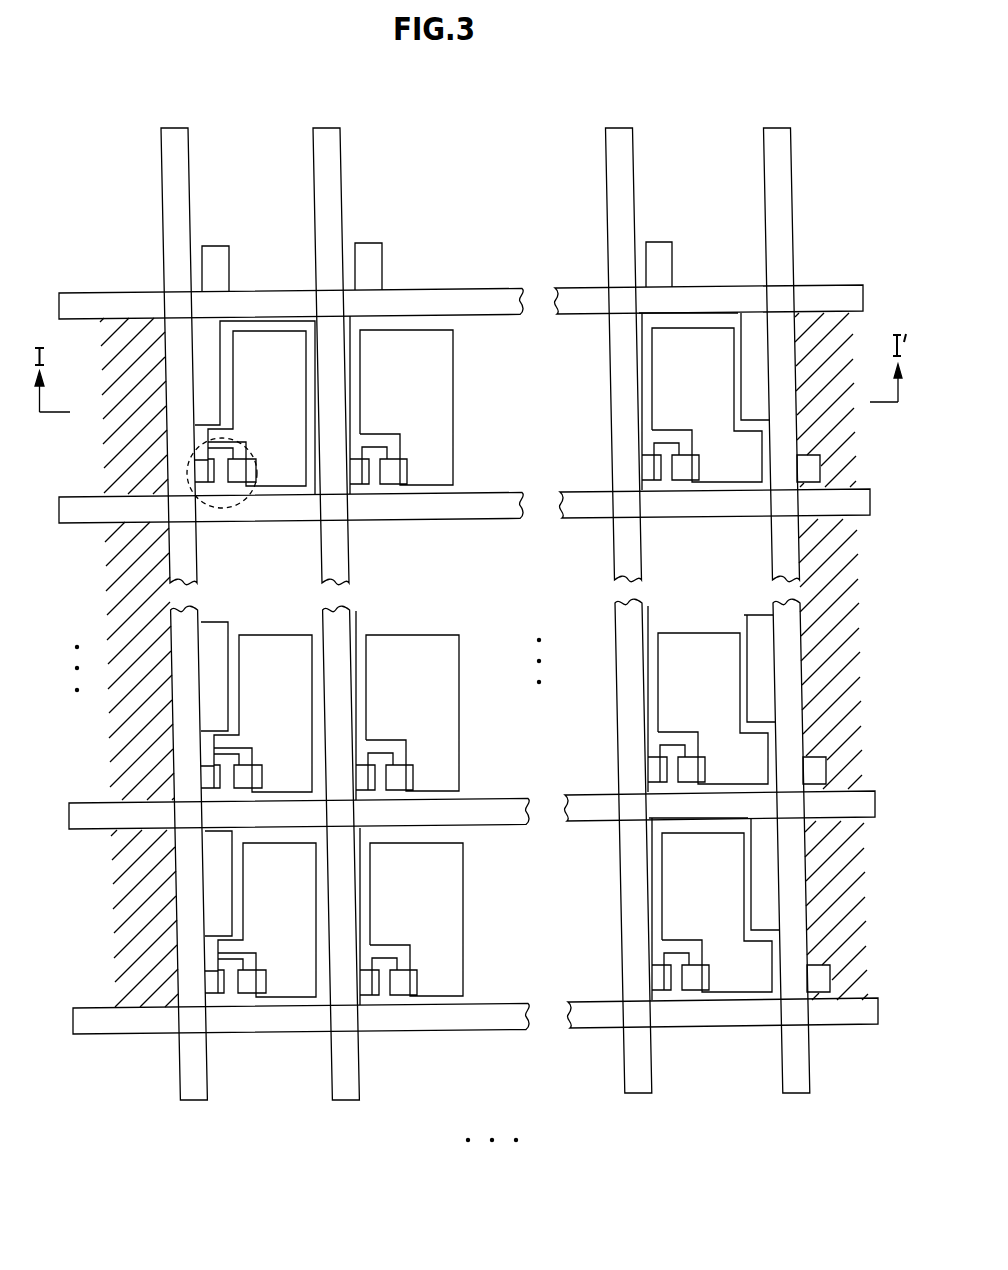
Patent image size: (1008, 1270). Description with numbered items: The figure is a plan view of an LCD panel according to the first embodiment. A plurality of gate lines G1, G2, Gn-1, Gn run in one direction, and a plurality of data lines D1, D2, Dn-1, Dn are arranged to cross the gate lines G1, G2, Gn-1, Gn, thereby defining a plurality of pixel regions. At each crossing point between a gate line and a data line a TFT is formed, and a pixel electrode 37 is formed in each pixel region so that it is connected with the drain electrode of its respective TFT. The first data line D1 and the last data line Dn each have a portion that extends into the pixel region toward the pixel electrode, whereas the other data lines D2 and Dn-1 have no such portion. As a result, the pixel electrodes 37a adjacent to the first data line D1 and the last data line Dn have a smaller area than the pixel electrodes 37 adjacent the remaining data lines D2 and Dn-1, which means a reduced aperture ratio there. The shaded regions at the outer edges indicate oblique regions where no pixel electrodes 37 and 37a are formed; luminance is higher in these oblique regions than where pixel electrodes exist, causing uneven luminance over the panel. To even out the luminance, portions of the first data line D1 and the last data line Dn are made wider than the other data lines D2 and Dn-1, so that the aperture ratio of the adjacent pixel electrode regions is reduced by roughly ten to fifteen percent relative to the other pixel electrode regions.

The pixel electrode 37 is at (448, 392).
The pixel electrode 37a is at (268, 347).
The gate line G1 is at (72, 295).
The gate line G2 is at (72, 497).
The gate line Gn-1 is at (82, 808).
The gate line Gn is at (87, 1009).
The first data line D1 is at (195, 1097).
The data line D2 is at (345, 1097).
The data line Dn-1 is at (638, 1090).
The last data line Dn is at (795, 1088).
The thin film transistor TFT is at (227, 510).